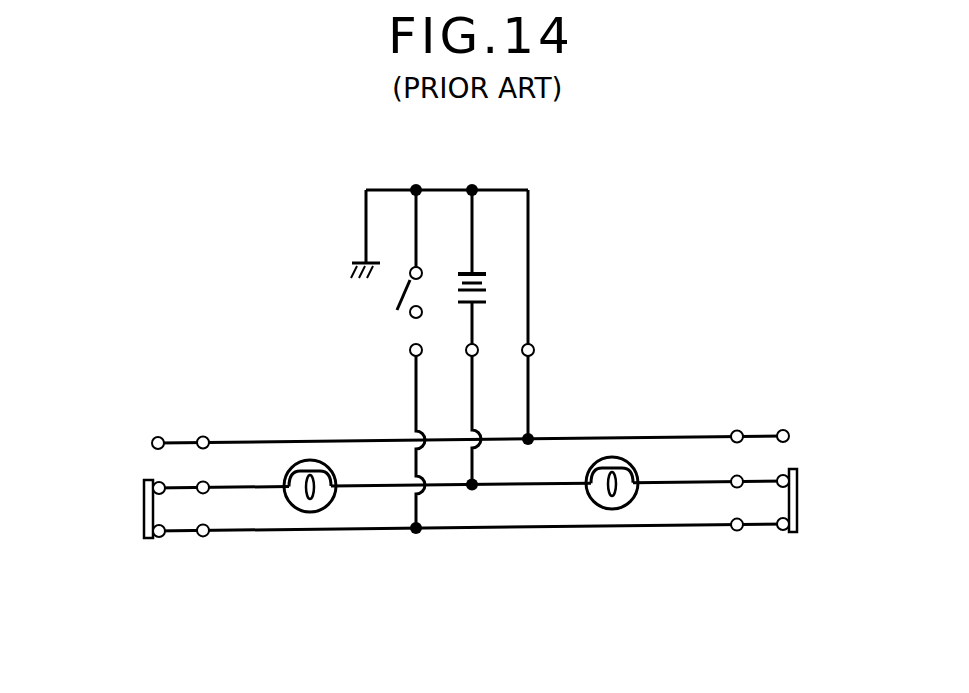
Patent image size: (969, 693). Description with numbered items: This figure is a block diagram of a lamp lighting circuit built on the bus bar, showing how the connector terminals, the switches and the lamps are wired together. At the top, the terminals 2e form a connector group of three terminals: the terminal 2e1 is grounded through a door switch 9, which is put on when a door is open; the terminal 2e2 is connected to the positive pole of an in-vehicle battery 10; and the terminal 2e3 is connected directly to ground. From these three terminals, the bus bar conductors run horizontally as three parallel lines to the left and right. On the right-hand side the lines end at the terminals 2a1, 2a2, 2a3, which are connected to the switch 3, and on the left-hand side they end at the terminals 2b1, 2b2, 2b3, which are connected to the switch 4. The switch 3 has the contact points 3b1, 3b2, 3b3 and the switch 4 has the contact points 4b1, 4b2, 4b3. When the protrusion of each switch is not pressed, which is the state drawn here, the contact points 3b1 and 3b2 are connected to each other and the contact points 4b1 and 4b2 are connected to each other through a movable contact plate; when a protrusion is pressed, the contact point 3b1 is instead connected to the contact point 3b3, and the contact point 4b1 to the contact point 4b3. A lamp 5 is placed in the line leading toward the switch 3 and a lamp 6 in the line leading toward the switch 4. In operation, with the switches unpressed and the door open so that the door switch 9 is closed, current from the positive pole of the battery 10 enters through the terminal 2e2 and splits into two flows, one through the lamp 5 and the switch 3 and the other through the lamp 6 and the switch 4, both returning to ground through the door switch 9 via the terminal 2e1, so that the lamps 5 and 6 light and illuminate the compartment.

The terminals 2e is at (464, 333).
The terminal 2e1 is at (408, 352).
The terminal 2e2 is at (479, 347).
The terminal 2e3 is at (535, 346).
The terminal 2a1 is at (732, 487).
The terminal 2a2 is at (737, 531).
The terminal 2a3 is at (737, 430).
The terminal 2b1 is at (208, 493).
The terminal 2b2 is at (203, 537).
The terminal 2b3 is at (206, 438).
The switch 3 is at (834, 492).
The contact point 3b1 is at (790, 475).
The contact point 3b2 is at (783, 531).
The contact point 3b3 is at (784, 430).
The switch 4 is at (97, 502).
The contact point 4b1 is at (156, 482).
The contact point 4b2 is at (156, 537).
The contact point 4b3 is at (155, 438).
The lamp 5 is at (593, 503).
The lamp 6 is at (322, 511).
The door switch 9 is at (408, 313).
The in-vehicle battery 10 is at (489, 272).